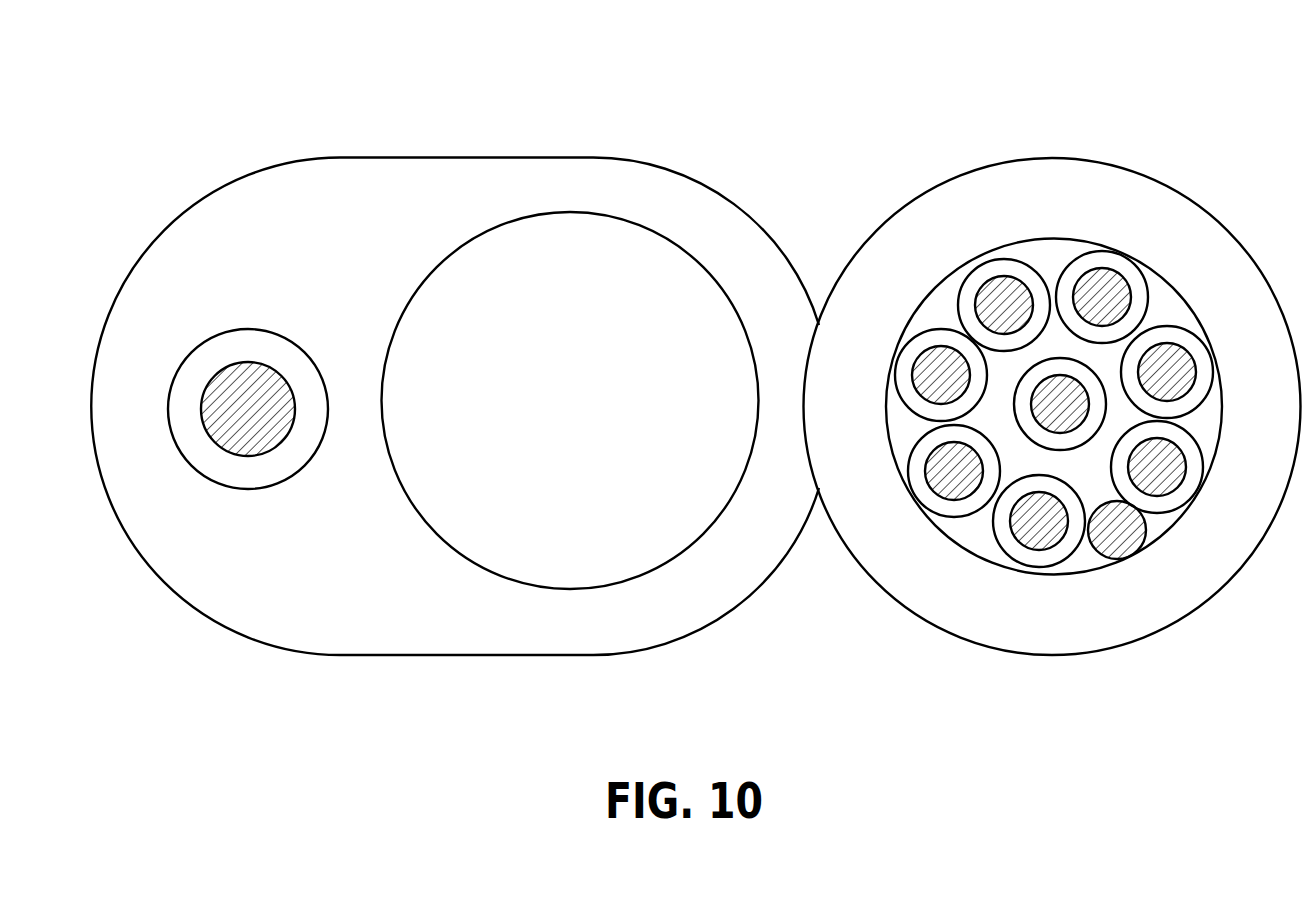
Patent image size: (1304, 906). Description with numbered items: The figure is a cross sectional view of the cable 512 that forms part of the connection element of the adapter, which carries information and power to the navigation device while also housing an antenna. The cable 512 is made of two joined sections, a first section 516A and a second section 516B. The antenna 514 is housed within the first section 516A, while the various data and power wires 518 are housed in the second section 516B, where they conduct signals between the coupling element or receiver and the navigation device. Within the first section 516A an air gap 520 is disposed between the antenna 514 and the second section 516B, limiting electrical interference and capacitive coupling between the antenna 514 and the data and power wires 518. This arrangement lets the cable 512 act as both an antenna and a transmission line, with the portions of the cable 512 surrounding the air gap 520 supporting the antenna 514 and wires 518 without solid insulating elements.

The cable 512 is at (821, 124).
The antenna 514 is at (237, 430).
The first section 516A is at (382, 197).
The second section 516B is at (1162, 207).
The data and power wires 518 is at (960, 485).
The air gap 520 is at (600, 445).